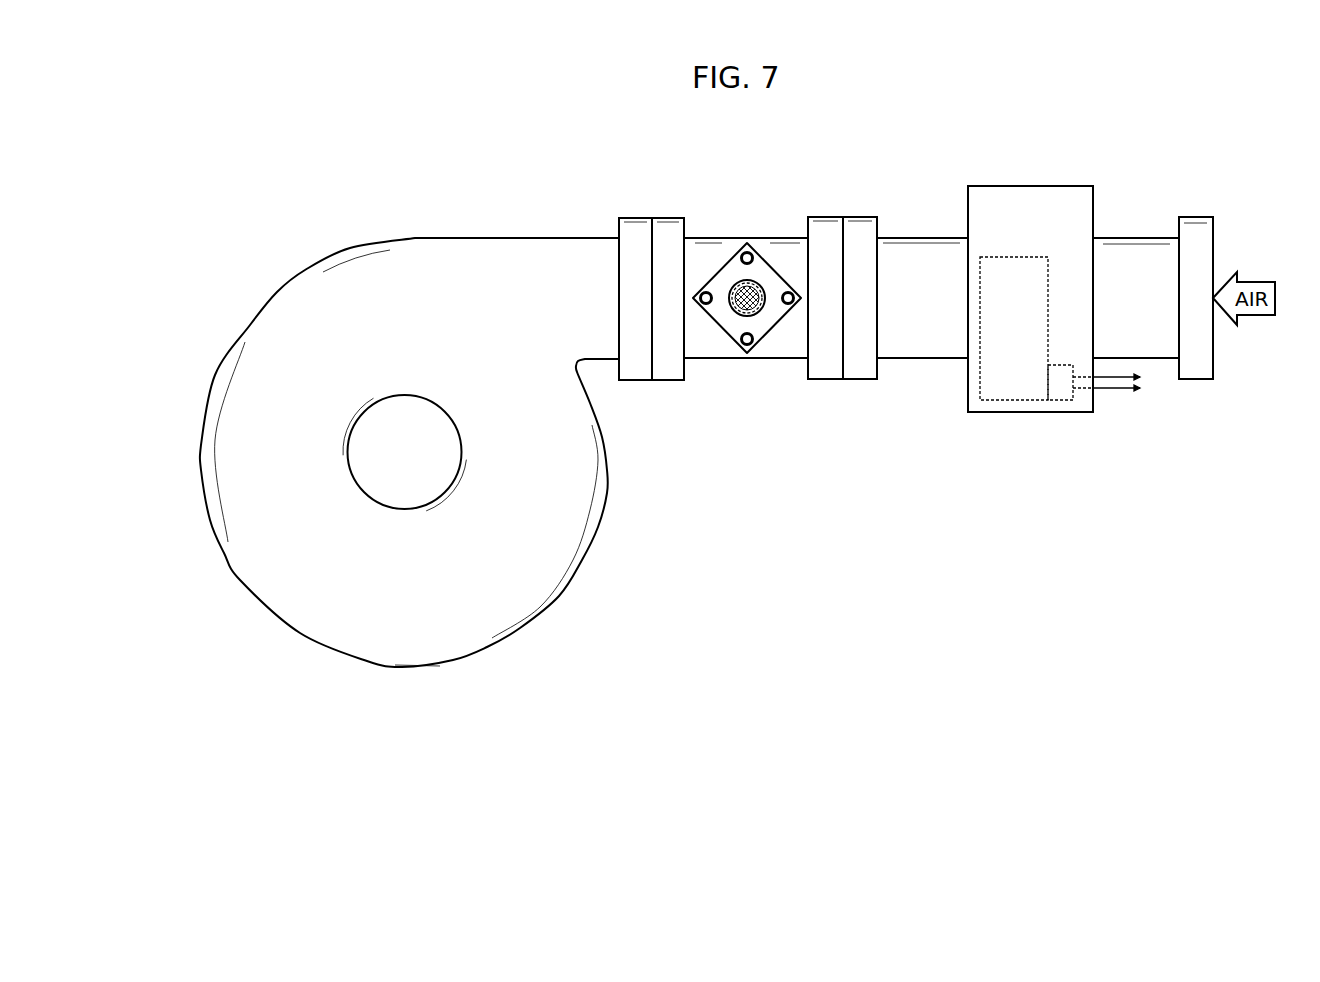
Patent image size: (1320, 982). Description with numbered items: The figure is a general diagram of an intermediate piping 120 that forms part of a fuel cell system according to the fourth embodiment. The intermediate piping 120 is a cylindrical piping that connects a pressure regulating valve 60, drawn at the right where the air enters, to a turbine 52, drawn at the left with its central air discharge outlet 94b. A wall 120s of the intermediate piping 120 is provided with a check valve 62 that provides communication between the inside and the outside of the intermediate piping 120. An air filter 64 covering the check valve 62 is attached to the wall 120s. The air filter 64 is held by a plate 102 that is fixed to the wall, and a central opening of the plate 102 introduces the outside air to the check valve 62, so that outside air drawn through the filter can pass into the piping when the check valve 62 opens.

The turbine 52 is at (302, 268).
The air discharge outlet 94b is at (407, 496).
The intermediate piping 120 is at (781, 236).
The wall 120s is at (716, 263).
The plate 102 is at (722, 318).
The air filter 64 is at (737, 310).
The check valve 62 is at (755, 318).
The pressure regulating valve 60 is at (1060, 195).